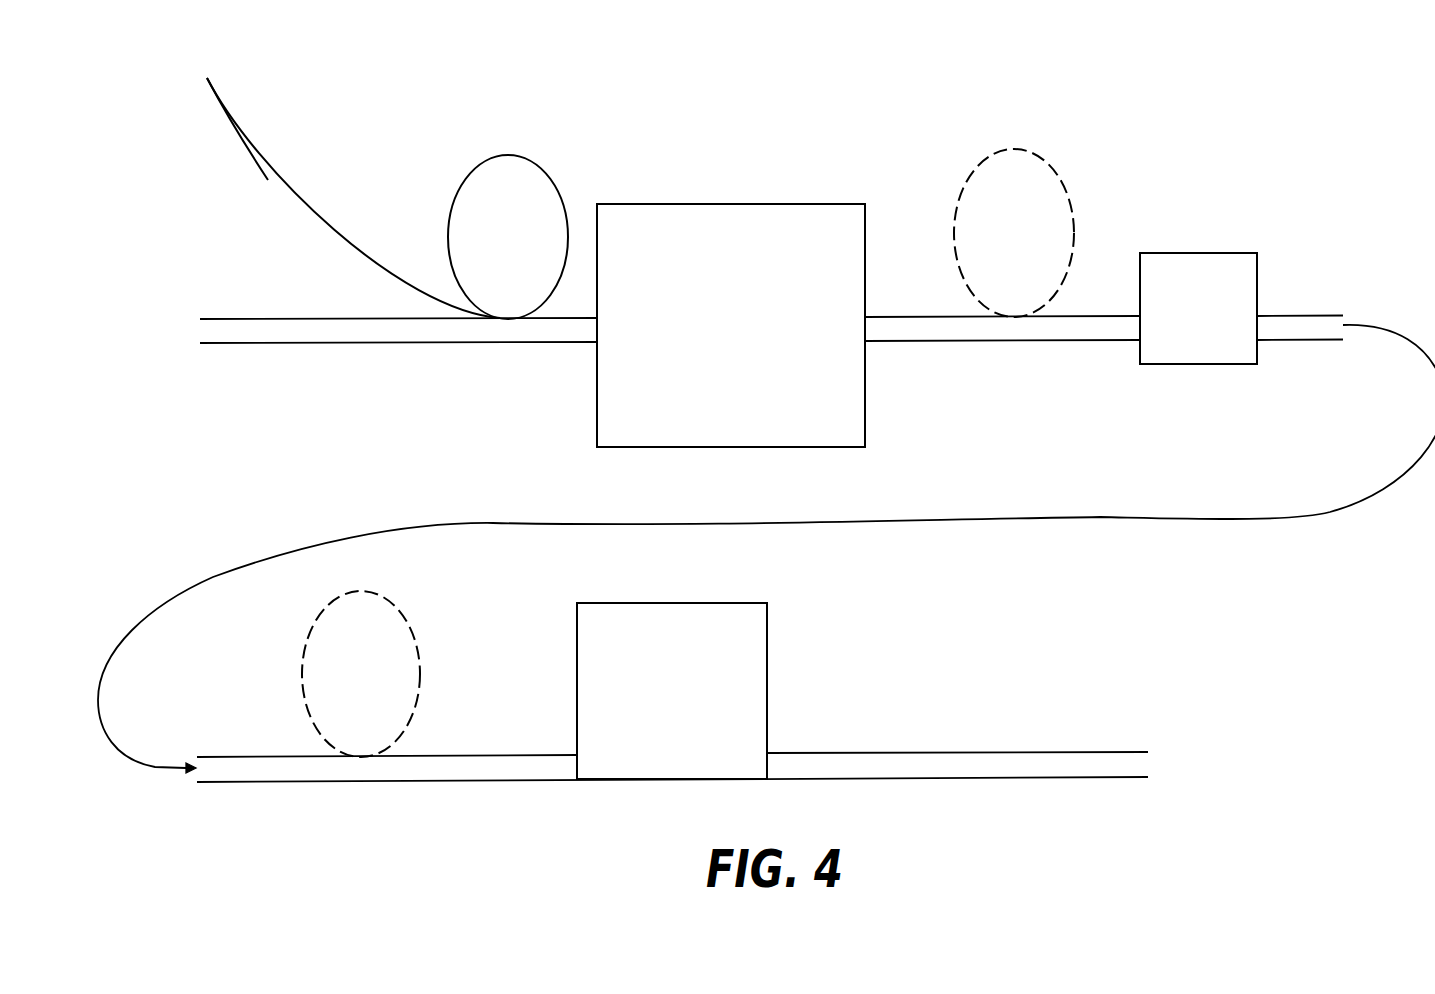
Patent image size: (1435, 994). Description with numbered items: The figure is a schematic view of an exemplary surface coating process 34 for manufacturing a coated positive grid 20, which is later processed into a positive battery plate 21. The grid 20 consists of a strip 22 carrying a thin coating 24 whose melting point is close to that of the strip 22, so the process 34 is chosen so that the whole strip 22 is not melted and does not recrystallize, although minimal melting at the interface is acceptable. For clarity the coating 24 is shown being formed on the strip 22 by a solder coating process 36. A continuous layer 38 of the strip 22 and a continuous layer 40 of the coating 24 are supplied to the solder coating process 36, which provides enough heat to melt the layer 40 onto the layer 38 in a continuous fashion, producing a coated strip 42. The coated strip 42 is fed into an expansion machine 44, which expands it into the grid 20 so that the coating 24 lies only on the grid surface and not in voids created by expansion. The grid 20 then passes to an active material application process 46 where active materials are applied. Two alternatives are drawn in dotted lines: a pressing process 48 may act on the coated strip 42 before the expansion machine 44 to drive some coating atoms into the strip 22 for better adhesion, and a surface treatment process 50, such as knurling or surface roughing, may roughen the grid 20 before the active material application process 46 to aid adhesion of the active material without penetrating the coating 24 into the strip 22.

The coated positive grid 20 is at (1299, 351).
The positive battery plate 21 is at (828, 767).
The strip 22 is at (225, 332).
The thin coating 24 is at (270, 182).
The surface coating process 34 is at (731, 120).
The solder coating process 36 is at (788, 204).
The continuous layer of strip 38 is at (328, 344).
The continuous layer of coating 40 is at (212, 93).
The coated strip 42 is at (902, 328).
The expansion machine 44 is at (1185, 365).
The active material application process 46 is at (743, 659).
The pressing process 48 is at (1013, 150).
The surface treatment process 50 is at (398, 607).